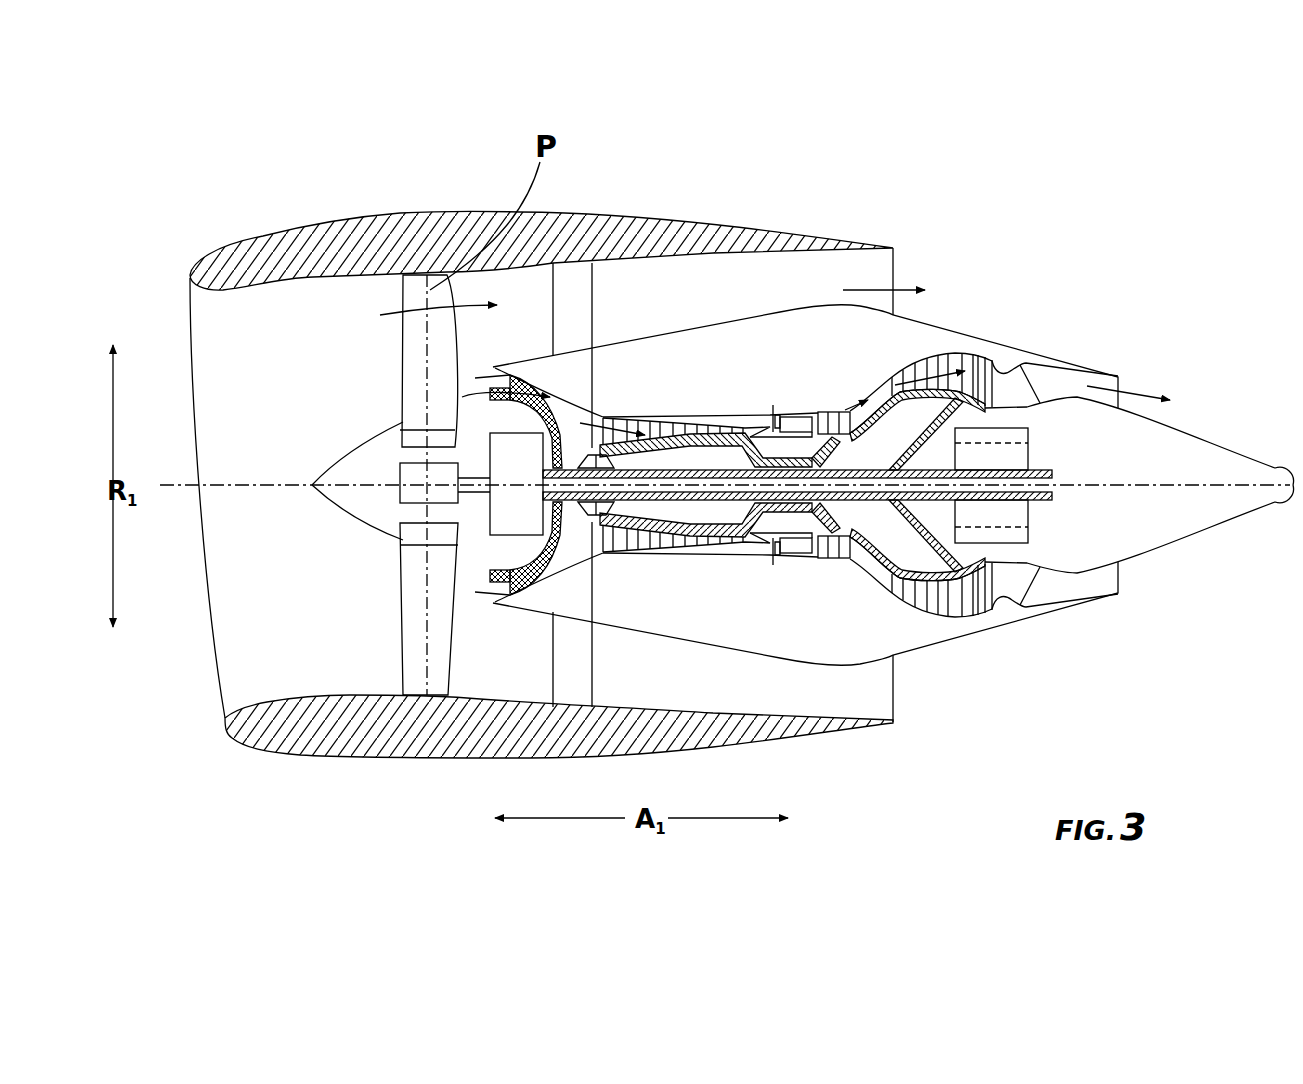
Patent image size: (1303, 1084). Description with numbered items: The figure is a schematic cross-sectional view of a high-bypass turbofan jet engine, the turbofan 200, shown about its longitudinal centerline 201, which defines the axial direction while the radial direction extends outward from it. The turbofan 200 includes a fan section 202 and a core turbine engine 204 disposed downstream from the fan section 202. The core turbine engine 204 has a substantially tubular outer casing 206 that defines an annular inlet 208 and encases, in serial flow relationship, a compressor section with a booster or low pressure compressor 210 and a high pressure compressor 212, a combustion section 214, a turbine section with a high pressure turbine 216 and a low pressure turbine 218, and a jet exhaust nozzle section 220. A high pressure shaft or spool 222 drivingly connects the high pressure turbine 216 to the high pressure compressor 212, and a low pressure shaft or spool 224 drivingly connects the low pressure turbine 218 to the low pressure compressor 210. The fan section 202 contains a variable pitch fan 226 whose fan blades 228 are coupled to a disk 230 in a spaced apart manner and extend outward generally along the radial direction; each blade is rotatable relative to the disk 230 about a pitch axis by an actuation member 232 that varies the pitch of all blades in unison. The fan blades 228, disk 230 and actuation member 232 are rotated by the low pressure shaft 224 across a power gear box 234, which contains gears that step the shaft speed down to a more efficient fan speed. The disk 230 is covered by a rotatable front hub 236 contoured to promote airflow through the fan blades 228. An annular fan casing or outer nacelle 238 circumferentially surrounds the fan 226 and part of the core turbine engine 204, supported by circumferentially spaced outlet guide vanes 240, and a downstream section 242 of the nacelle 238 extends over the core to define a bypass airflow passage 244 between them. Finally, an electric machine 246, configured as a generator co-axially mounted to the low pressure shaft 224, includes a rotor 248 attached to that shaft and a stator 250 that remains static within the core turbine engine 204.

The turbofan 200 is at (1040, 231).
The longitudinal centerline 201 is at (1098, 485).
The fan section 202 is at (358, 302).
The core turbine engine 204 is at (710, 370).
The outer casing 206 is at (747, 652).
The annular inlet 208 is at (508, 593).
The low pressure compressor 210 is at (535, 605).
The high pressure compressor 212 is at (620, 543).
The combustion section 214 is at (790, 548).
The high pressure turbine 216 is at (898, 538).
The low pressure turbine 218 is at (977, 610).
The jet exhaust nozzle section 220 is at (1040, 596).
The high pressure shaft 222 is at (795, 455).
The low pressure shaft 224 is at (1044, 470).
The variable pitch fan 226 is at (367, 539).
The fan blades 228 is at (400, 633).
The disk 230 is at (417, 440).
The actuation member 232 is at (400, 463).
The power gear box 234 is at (525, 450).
The front hub 236 is at (400, 503).
The outer nacelle 238 is at (445, 760).
The outlet guide vanes 240 is at (594, 295).
The downstream section 242 is at (821, 240).
The bypass airflow passage 244 is at (956, 336).
The electric machine 246 is at (1040, 414).
The rotor 248 is at (1012, 508).
The stator 250 is at (1010, 530).